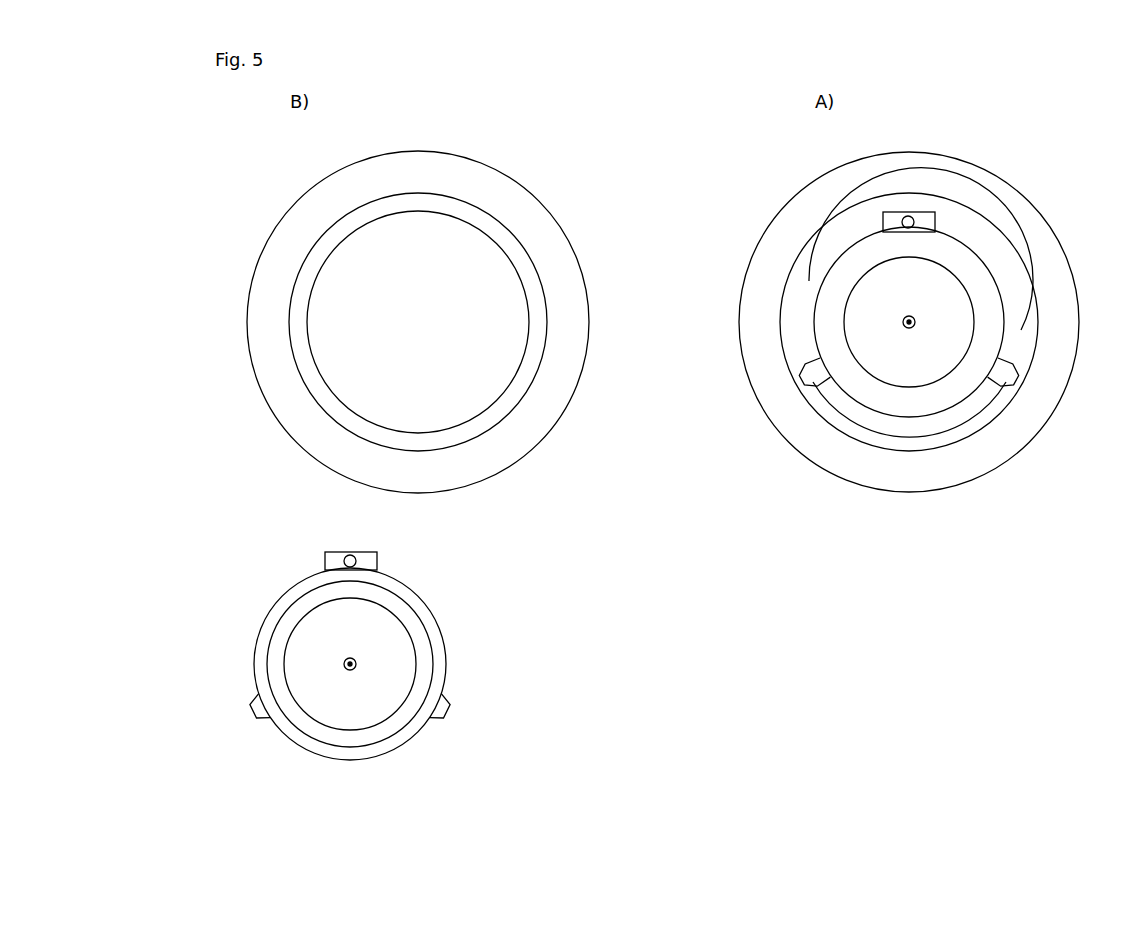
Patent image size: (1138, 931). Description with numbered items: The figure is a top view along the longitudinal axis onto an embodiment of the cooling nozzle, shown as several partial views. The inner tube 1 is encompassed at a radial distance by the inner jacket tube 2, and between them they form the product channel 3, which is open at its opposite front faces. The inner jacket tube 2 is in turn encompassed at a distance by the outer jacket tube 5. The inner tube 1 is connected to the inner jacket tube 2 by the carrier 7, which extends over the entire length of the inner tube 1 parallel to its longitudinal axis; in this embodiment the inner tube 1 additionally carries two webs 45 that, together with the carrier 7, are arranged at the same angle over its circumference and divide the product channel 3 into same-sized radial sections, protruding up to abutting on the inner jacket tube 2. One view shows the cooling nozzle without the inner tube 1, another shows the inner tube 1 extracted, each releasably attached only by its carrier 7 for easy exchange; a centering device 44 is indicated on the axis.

The inner tube 1 is at (490, 232).
The inner jacket tube 2 is at (462, 197).
The product channel 3 is at (520, 252).
The outer jacket tube 5 is at (436, 152).
The carrier 7 is at (890, 222).
The centering device 44 is at (905, 327).
The webs 45 is at (805, 377).